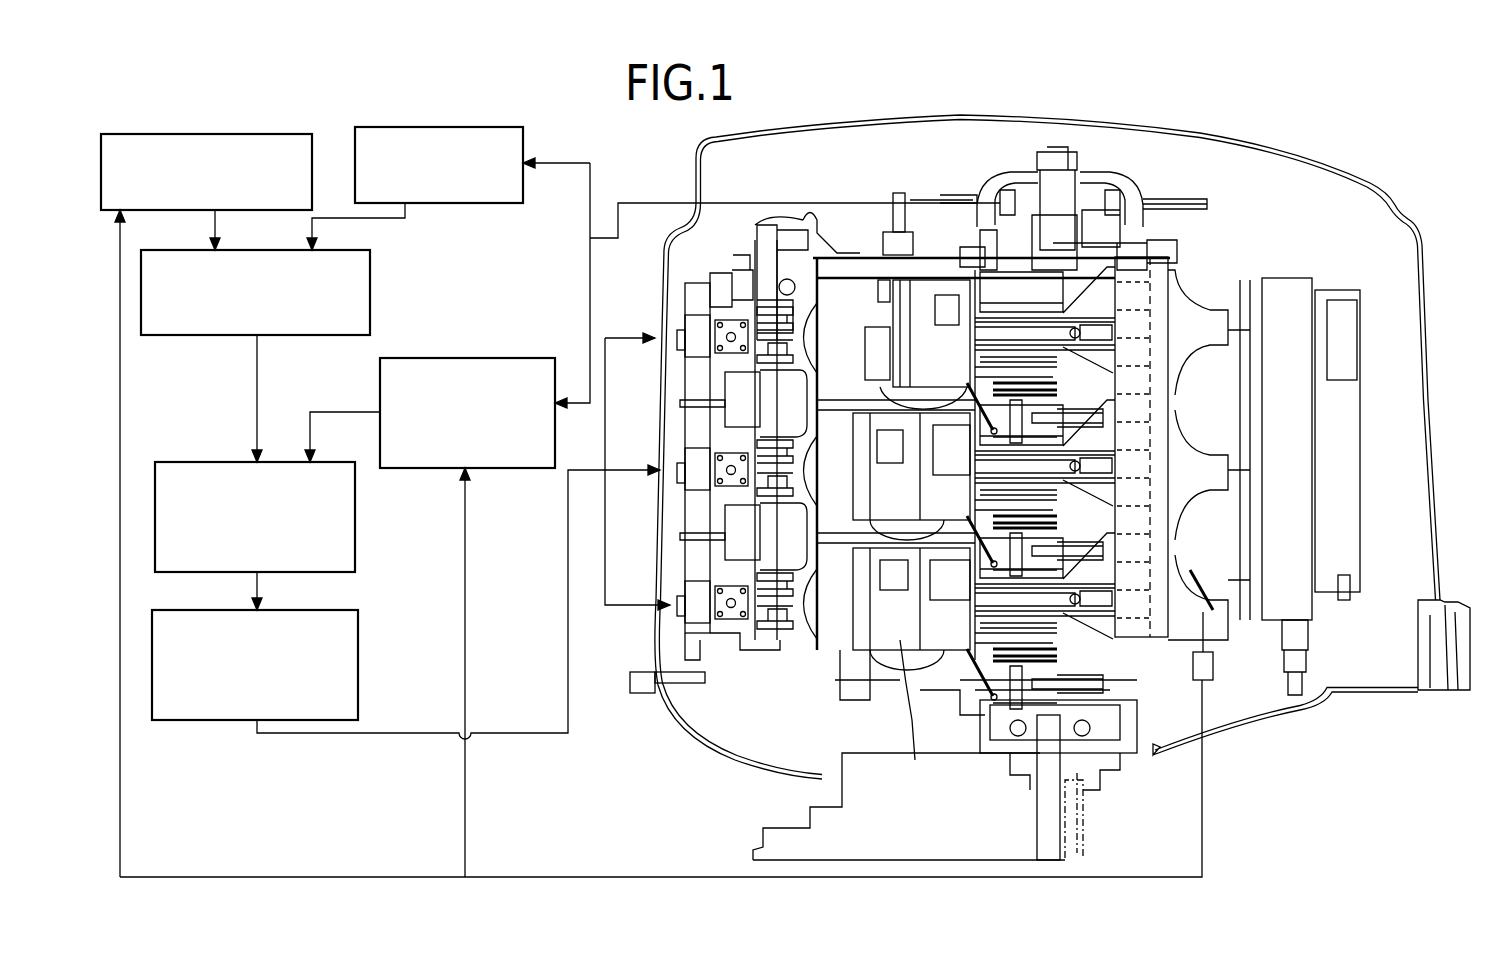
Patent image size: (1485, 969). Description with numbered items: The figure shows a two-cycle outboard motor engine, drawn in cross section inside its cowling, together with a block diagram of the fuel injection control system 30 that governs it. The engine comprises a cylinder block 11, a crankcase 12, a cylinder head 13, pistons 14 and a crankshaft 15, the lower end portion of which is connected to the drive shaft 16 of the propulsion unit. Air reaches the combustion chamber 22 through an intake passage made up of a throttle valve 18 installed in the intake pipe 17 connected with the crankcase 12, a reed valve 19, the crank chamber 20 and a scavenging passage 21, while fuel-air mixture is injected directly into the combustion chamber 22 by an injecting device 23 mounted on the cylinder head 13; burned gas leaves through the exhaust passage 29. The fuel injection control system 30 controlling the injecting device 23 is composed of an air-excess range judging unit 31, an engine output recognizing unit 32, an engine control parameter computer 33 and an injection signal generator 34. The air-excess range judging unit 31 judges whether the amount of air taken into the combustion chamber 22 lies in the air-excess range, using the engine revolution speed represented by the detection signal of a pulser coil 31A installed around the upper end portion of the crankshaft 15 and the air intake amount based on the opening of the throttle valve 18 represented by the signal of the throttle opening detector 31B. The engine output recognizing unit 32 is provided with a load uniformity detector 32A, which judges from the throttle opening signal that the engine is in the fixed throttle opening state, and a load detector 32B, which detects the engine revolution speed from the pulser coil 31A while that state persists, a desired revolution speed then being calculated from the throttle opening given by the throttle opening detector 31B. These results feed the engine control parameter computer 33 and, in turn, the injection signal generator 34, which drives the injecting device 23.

The cylinder block 11 is at (1044, 487).
The crankcase 12 is at (1118, 711).
The cylinder head 13 is at (800, 714).
The pistons 14 is at (863, 690).
The crankshaft 15 is at (977, 690).
The drive shaft 16 is at (1037, 818).
The intake pipe 17 is at (1205, 545).
The throttle valve 18 is at (1215, 580).
The reed valve 19 is at (1118, 528).
The crank chamber 20 is at (1088, 607).
The scavenging passage 21 is at (913, 740).
The combustion chamber 22 is at (795, 612).
The injecting device 23 is at (692, 610).
The exhaust passage 29 is at (872, 333).
The fuel injection control system 30 is at (252, 120).
The air-excess range judging unit 31 is at (495, 363).
The pulser coil 31A is at (898, 193).
The throttle opening detector 31B is at (1213, 653).
The engine output recognizing unit 32 is at (154, 334).
The load uniformity detector 32A is at (185, 140).
The load detector 32B is at (526, 116).
The engine control parameter computer 33 is at (162, 568).
The injection signal generator 34 is at (163, 720).